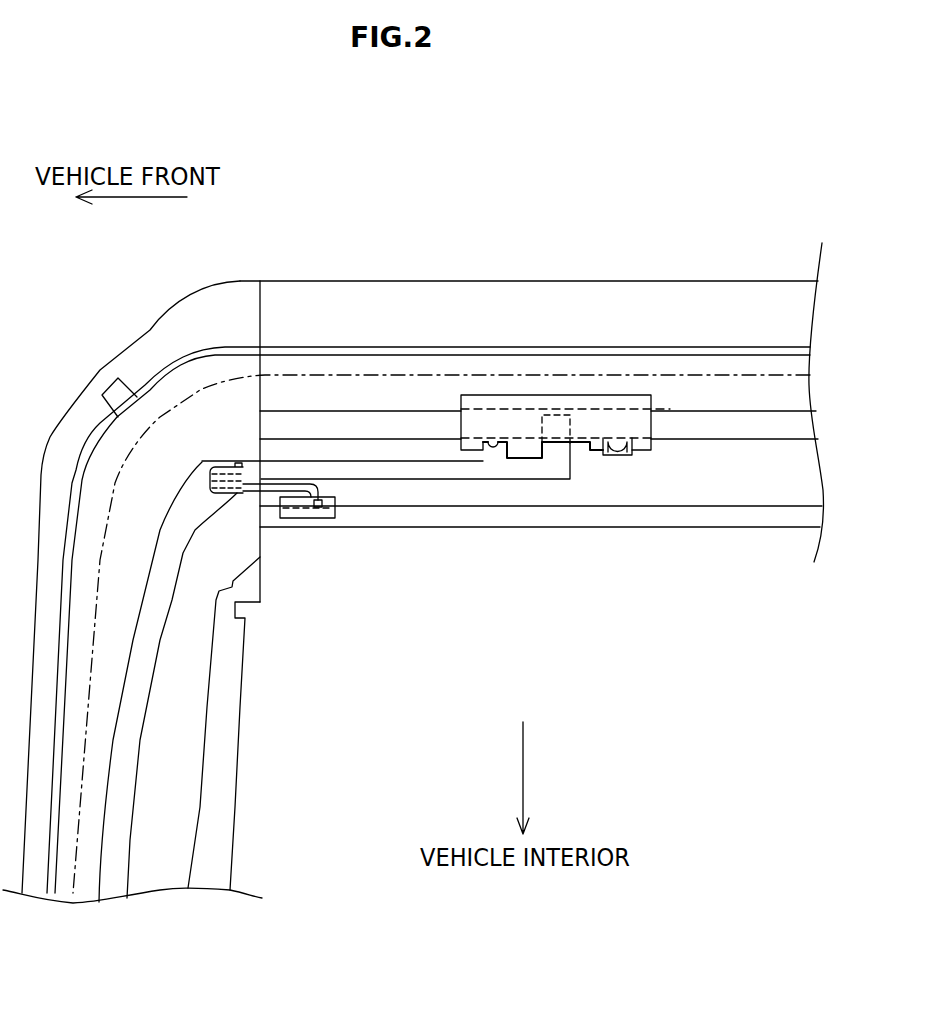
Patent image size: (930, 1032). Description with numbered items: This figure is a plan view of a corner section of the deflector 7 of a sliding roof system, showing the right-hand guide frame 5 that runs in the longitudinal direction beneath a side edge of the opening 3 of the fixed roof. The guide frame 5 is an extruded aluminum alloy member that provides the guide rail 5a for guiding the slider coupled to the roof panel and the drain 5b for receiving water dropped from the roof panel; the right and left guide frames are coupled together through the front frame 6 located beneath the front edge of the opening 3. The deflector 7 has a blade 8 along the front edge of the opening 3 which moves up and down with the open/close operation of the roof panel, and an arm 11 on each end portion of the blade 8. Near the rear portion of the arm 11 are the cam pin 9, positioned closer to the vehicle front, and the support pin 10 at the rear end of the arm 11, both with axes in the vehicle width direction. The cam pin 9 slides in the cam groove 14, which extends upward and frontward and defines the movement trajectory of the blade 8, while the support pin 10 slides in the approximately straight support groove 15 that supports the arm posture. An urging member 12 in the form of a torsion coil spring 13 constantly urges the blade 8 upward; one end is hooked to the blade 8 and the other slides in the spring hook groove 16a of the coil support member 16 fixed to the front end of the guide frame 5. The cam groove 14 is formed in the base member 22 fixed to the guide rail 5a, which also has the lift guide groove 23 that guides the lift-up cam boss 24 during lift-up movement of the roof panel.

The opening 3 is at (305, 373).
The guide frame 5 is at (368, 292).
The guide rail 5a is at (746, 489).
The drain 5b is at (745, 386).
The front frame 6 is at (230, 714).
The deflector 7 is at (164, 837).
The blade 8 is at (128, 764).
The cam pin 9 is at (493, 447).
The support pin 10 is at (555, 415).
The arm 11 is at (390, 474).
The urging member 12 is at (185, 374).
The torsion coil spring 13 is at (215, 467).
The cam groove 14 is at (490, 395).
The support groove 15 is at (520, 395).
The coil support member 16 is at (300, 518).
The spring hook groove 16a is at (313, 505).
The base member 22 is at (592, 395).
The lift guide groove 23 is at (622, 438).
The lift-up cam boss 24 is at (620, 457).